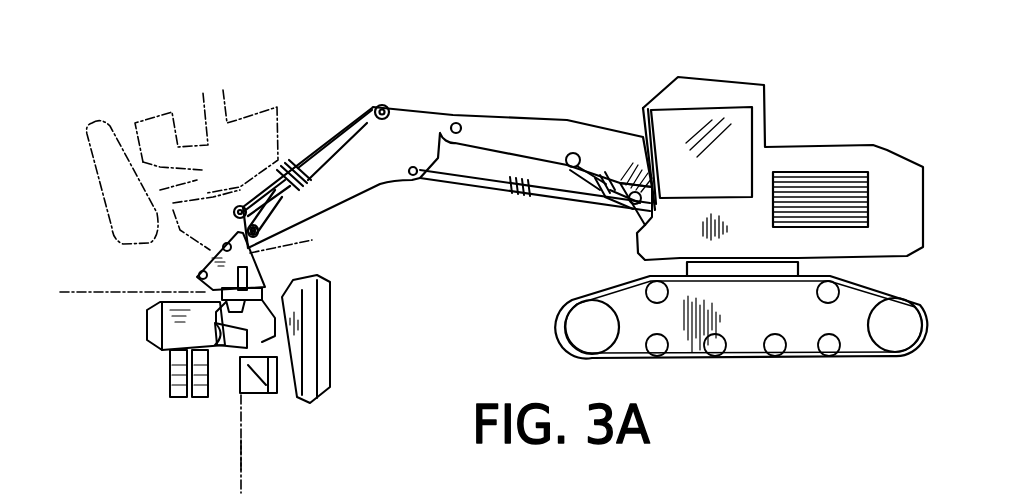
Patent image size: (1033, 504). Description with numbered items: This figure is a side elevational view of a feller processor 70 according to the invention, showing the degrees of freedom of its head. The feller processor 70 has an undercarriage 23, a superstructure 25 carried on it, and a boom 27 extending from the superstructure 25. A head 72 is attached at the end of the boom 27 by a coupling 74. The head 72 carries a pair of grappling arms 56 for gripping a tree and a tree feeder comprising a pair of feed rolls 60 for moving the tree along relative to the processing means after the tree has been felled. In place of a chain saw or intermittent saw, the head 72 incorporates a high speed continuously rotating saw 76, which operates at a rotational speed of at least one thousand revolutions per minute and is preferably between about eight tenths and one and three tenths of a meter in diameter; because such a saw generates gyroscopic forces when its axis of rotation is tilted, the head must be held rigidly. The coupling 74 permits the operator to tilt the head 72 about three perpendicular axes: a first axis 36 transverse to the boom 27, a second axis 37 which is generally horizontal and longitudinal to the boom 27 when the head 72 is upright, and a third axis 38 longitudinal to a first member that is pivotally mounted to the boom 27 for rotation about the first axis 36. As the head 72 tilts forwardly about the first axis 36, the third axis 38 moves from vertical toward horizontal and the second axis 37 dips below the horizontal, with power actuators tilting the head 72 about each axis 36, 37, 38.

The undercarriage 23 is at (600, 292).
The superstructure 25 is at (784, 136).
The boom 27 is at (441, 96).
The first axis 36 is at (301, 241).
The second axis 37 is at (237, 465).
The third axis 38 is at (92, 290).
The grappling arms 56 is at (173, 384).
The feed rolls 60 is at (273, 393).
The feller processor 70 is at (599, 87).
The head 72 is at (256, 413).
The coupling 74 is at (276, 269).
The high speed continuously rotating saw 76 is at (326, 316).